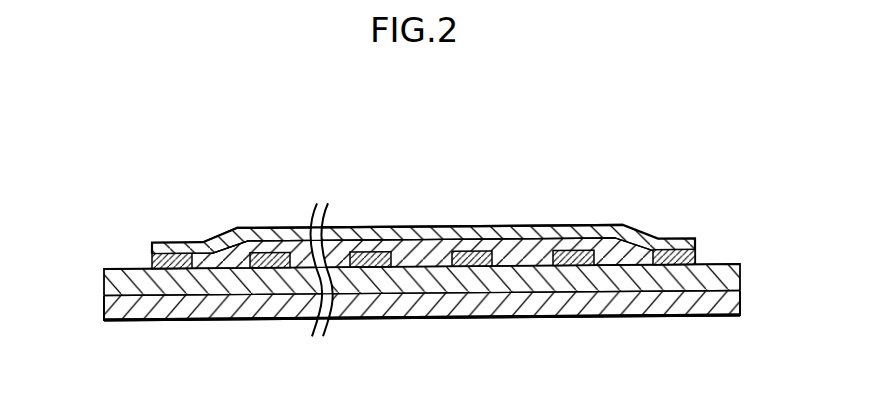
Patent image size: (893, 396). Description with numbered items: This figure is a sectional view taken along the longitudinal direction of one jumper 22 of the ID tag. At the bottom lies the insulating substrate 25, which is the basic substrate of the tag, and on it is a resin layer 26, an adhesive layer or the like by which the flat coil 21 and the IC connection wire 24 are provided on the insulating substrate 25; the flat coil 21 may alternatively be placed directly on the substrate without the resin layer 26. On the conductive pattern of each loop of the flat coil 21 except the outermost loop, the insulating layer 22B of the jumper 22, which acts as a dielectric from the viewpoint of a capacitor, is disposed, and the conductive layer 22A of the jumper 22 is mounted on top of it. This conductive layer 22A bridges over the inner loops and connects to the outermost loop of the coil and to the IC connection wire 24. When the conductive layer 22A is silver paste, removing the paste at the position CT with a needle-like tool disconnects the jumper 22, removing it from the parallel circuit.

The flat coil 21 is at (370, 229).
The jumper 22 is at (423, 200).
The conductive layer 22A is at (605, 228).
The insulating layer 22B is at (647, 173).
The IC connection wire 24 is at (152, 262).
The insulating substrate 25 is at (104, 305).
The resin layer 26 is at (104, 279).
The cut position CT is at (235, 223).